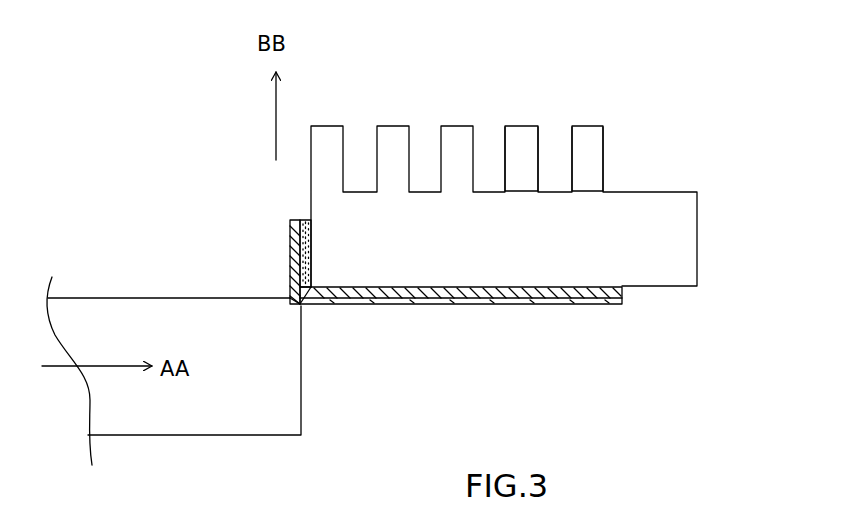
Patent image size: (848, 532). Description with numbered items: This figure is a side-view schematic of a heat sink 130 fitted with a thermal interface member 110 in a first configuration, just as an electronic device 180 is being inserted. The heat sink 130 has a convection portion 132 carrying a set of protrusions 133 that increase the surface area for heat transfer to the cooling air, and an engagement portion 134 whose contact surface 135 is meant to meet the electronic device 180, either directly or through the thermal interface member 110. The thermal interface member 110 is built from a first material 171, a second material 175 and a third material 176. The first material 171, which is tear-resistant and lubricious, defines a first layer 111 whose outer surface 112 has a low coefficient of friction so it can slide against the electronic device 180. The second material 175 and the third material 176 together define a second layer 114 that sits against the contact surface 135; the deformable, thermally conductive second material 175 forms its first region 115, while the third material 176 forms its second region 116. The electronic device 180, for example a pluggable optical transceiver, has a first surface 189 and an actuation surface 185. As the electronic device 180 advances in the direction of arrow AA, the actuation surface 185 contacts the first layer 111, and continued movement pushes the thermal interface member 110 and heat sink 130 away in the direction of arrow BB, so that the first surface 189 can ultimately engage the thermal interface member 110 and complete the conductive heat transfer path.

The thermal interface member 110 is at (278, 224).
The first layer 111 is at (615, 303).
The outer surface 112 is at (481, 304).
The second layer 114 is at (622, 292).
The first region 115 is at (436, 301).
The second region 116 is at (290, 243).
The heat sink 130 is at (665, 205).
The convection portion 132 is at (600, 175).
The protrusions 133 is at (518, 132).
The engagement portion 134 is at (520, 240).
The contact surface 135 is at (520, 288).
The first material 171 is at (457, 304).
The second material 175 is at (448, 287).
The third material 176 is at (300, 268).
The electronic device 180 is at (88, 335).
The actuation surface 185 is at (293, 304).
The first surface 189 is at (135, 298).